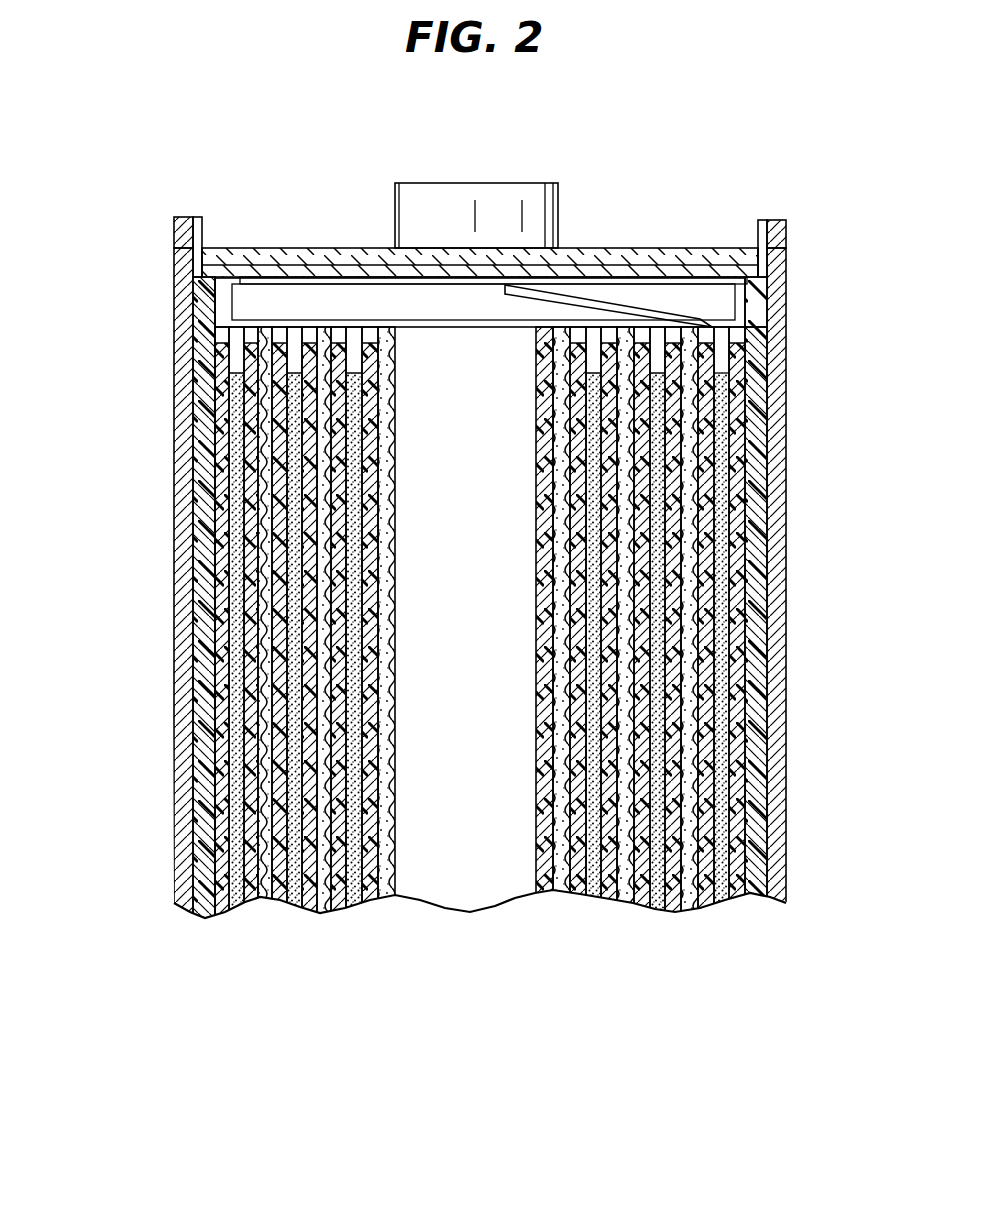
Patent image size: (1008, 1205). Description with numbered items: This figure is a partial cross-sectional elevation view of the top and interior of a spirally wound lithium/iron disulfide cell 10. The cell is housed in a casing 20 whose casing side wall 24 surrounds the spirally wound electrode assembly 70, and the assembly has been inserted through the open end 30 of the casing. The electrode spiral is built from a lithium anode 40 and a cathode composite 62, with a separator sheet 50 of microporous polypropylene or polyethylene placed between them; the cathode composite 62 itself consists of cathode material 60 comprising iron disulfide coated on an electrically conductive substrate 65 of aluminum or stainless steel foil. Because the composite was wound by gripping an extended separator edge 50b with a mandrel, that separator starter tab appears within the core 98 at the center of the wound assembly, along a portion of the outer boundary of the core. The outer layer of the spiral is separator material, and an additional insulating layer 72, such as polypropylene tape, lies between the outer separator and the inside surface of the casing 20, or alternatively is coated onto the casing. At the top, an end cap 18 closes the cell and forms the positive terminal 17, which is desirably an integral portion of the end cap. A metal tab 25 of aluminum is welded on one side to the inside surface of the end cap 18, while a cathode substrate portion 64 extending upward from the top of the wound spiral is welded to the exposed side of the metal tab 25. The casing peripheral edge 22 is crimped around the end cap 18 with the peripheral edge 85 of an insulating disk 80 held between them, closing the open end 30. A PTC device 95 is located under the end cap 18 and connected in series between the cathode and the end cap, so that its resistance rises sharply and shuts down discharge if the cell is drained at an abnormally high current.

The wound cell 10 is at (795, 335).
The positive terminal 17 is at (485, 182).
The end cap 18 is at (322, 249).
The casing 20 is at (184, 308).
The casing peripheral edge 22 is at (176, 226).
The casing side wall 24 is at (175, 818).
The metal tab 25 is at (690, 297).
The open end 30 is at (208, 242).
The lithium anode 40 is at (240, 485).
The separator sheet 50 is at (250, 535).
The extended separator edge 50b is at (538, 880).
The cathode material 60 is at (705, 606).
The cathode composite 62 is at (255, 640).
The cathode substrate portion 64 is at (762, 307).
The substrate 65 is at (712, 630).
The spirally wound electrode assembly 70 is at (205, 780).
The insulating layer 72 is at (210, 425).
The insulating disk 80 is at (772, 252).
The peripheral edge of insulating disk 85 is at (205, 235).
The PTC device 95 is at (652, 285).
The core 98 is at (445, 892).